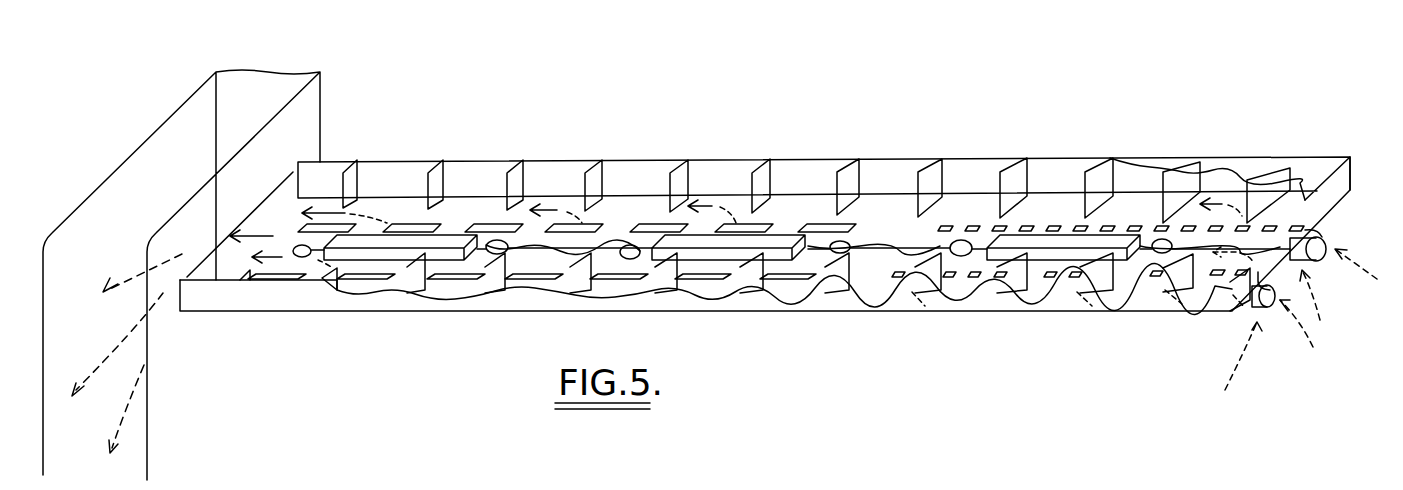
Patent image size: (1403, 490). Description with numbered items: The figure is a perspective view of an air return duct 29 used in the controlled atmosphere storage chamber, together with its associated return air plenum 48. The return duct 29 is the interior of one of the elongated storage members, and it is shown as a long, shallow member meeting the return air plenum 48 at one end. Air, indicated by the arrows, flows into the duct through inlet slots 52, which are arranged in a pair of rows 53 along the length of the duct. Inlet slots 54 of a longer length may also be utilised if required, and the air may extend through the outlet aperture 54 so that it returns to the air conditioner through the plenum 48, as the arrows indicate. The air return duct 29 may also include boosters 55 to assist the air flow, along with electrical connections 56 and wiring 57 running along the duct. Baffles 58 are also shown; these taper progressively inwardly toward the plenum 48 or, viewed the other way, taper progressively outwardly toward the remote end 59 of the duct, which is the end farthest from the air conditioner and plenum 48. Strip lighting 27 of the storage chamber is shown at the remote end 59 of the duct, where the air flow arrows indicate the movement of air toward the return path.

The strip lighting 27 is at (1271, 325).
The air return duct 29 is at (633, 145).
The return air plenum 48 is at (139, 163).
The inlet slots 52 is at (1043, 227).
The rows 53 is at (970, 210).
The inlet slots of longer length 54 is at (284, 188).
The boosters 55 is at (1100, 240).
The electrical connections 56 is at (1180, 235).
The wiring 57 is at (867, 245).
The baffles 58 is at (765, 178).
The remote end 59 is at (1358, 180).